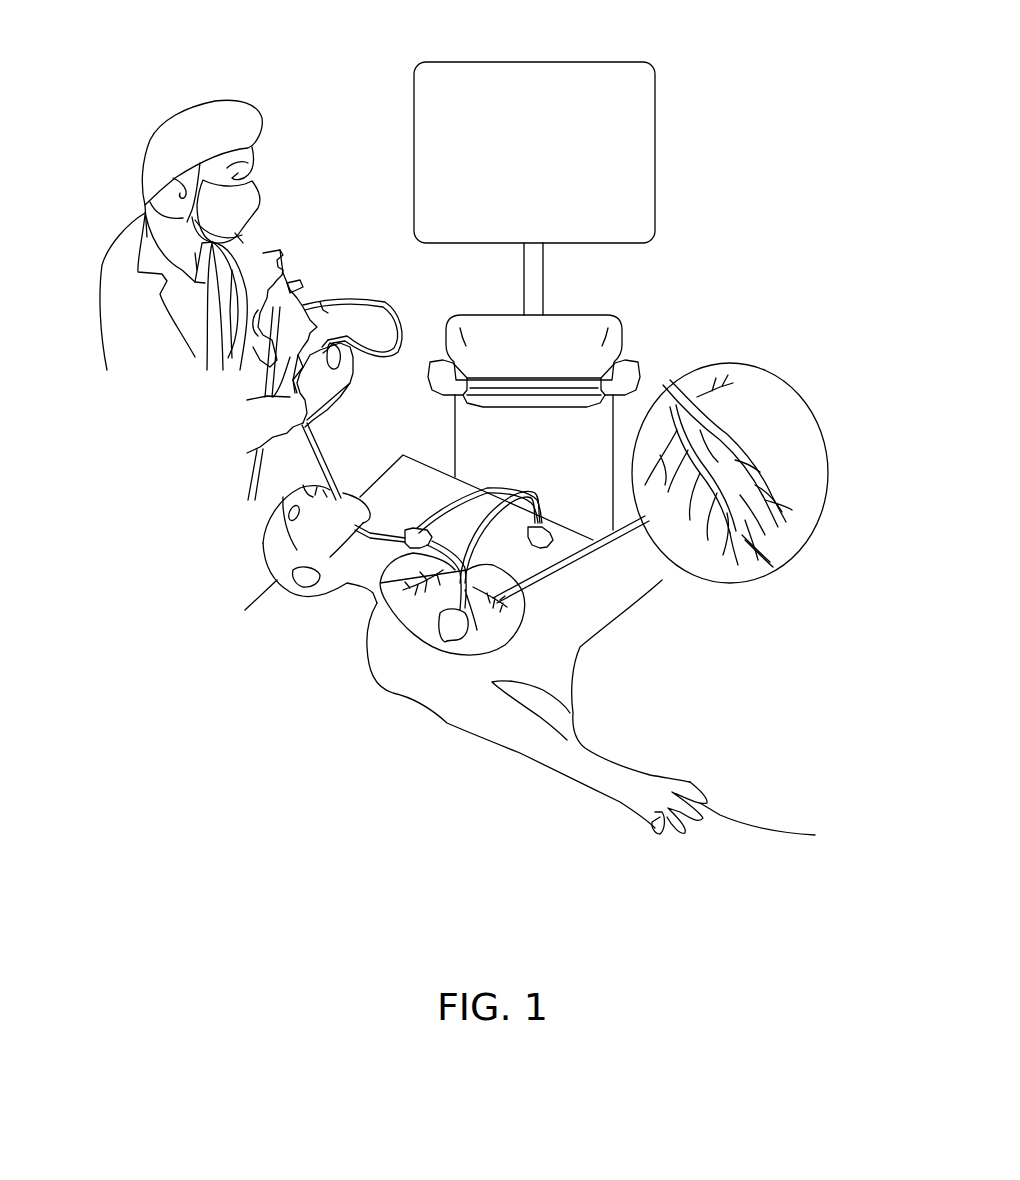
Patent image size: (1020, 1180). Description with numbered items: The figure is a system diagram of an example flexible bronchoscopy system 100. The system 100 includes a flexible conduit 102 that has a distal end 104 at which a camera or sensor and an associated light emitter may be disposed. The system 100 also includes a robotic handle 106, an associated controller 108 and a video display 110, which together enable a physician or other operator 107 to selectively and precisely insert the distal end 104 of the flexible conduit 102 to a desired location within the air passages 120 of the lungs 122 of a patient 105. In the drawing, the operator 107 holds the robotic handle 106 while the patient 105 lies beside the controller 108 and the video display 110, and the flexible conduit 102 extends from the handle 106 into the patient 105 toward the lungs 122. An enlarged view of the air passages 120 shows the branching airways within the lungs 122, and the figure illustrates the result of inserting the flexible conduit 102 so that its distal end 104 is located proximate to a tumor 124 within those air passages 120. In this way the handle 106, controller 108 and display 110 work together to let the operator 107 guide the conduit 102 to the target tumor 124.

The flexible bronchoscopy system 100 is at (808, 86).
The flexible conduit 102 is at (318, 458).
The distal end 104 is at (708, 568).
The patient 105 is at (510, 755).
The robotic handle 106 is at (277, 262).
The operator 107 is at (160, 132).
The controller 108 is at (630, 368).
The video display 110 is at (552, 63).
The air passages 120 is at (747, 443).
The lungs 122 is at (367, 646).
The tumor 124 is at (777, 560).